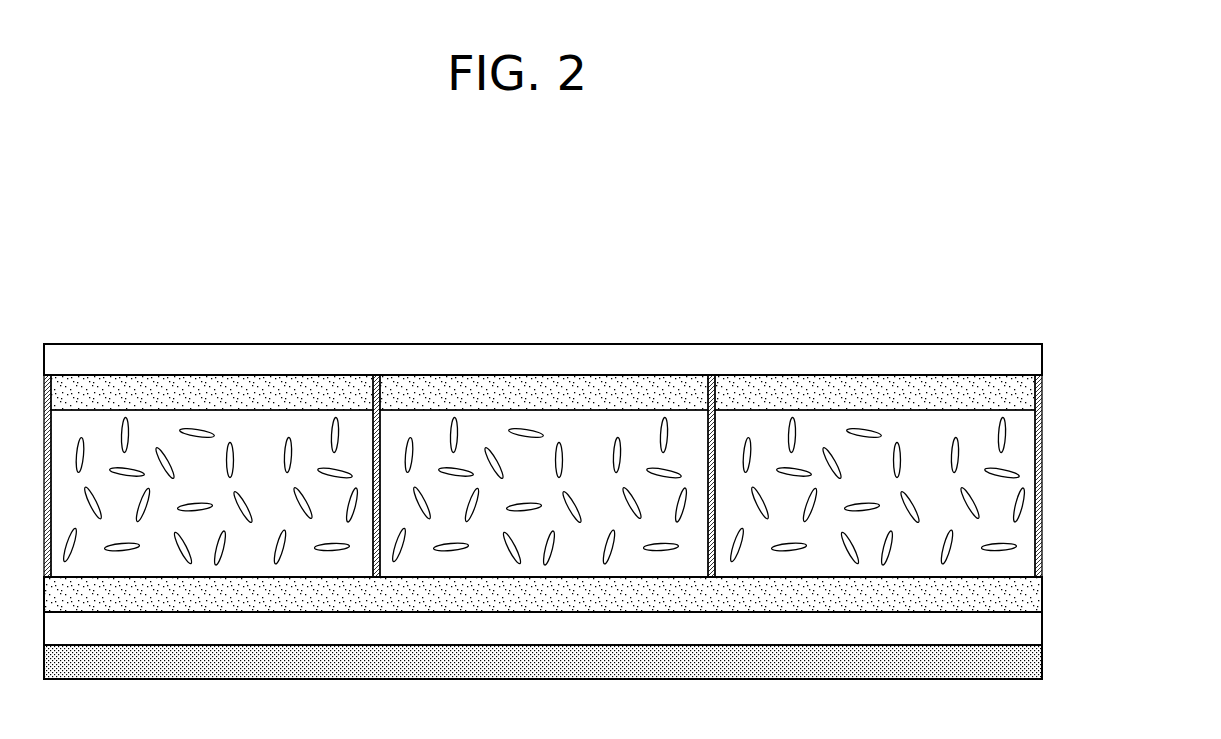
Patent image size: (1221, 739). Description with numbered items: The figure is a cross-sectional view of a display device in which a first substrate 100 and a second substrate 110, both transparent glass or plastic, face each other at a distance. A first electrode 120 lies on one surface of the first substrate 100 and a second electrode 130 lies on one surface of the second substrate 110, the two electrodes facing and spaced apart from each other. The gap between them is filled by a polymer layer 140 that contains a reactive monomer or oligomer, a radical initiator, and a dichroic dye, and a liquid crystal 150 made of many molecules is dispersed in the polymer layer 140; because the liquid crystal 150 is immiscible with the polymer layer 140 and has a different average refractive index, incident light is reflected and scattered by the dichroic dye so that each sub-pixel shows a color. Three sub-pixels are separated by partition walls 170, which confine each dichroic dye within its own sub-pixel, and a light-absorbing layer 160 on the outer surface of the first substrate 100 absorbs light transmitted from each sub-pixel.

The first substrate 100 is at (1028, 630).
The second substrate 110 is at (1028, 363).
The first electrode 120 is at (1028, 596).
The second electrode 130 is at (1030, 393).
The polymer layer 140 is at (1030, 433).
The liquid crystal 150 is at (1022, 504).
The light-absorbing layer 160 is at (1028, 667).
The partition walls 170 is at (1040, 470).